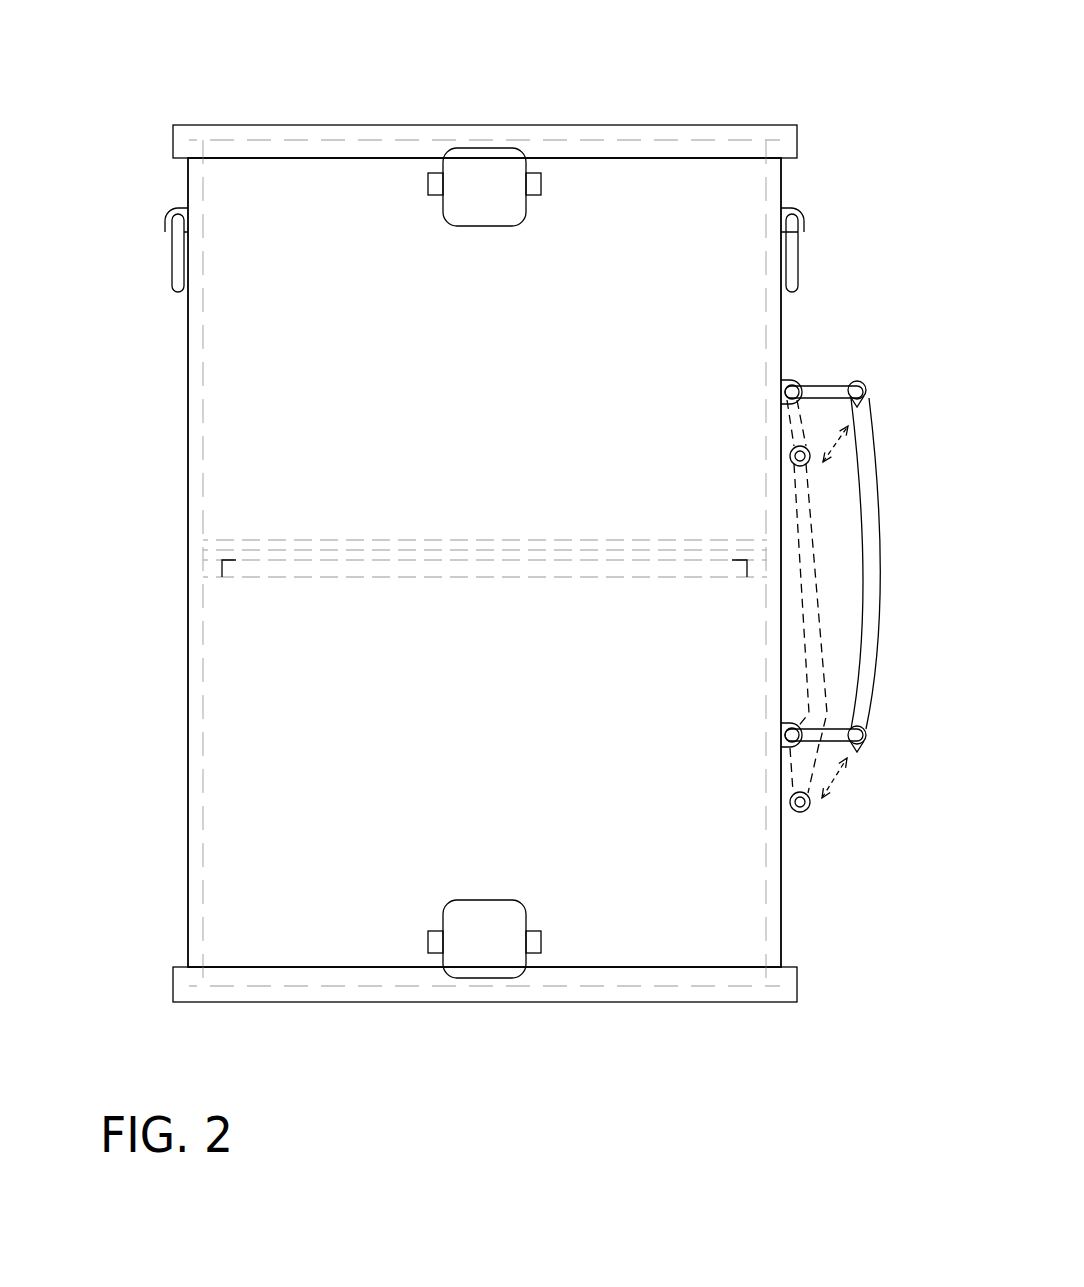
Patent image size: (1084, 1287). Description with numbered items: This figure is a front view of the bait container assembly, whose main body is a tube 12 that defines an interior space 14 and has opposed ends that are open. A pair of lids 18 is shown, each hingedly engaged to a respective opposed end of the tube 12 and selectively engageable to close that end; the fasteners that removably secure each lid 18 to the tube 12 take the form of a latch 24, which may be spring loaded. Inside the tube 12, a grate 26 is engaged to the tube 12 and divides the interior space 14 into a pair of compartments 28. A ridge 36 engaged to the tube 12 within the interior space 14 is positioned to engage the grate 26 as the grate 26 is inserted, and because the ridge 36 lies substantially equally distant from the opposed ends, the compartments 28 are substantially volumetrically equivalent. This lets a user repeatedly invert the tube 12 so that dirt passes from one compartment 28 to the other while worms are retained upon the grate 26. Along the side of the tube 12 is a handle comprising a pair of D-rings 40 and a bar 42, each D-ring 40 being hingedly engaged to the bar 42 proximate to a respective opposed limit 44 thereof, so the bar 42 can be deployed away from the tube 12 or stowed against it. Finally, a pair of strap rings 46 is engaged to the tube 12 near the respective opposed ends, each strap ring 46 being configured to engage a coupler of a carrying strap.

The tube 12 is at (188, 405).
The interior space 14 is at (308, 460).
The lid 18 is at (337, 126).
The latch 24 is at (483, 928).
The grate 26 is at (210, 545).
The compartment 28 is at (383, 667).
The ridge 36 is at (215, 567).
The D-ring 40 is at (829, 398).
The bar 42 is at (877, 602).
The opposed limit 44 is at (864, 731).
The strap ring 46 is at (181, 267).